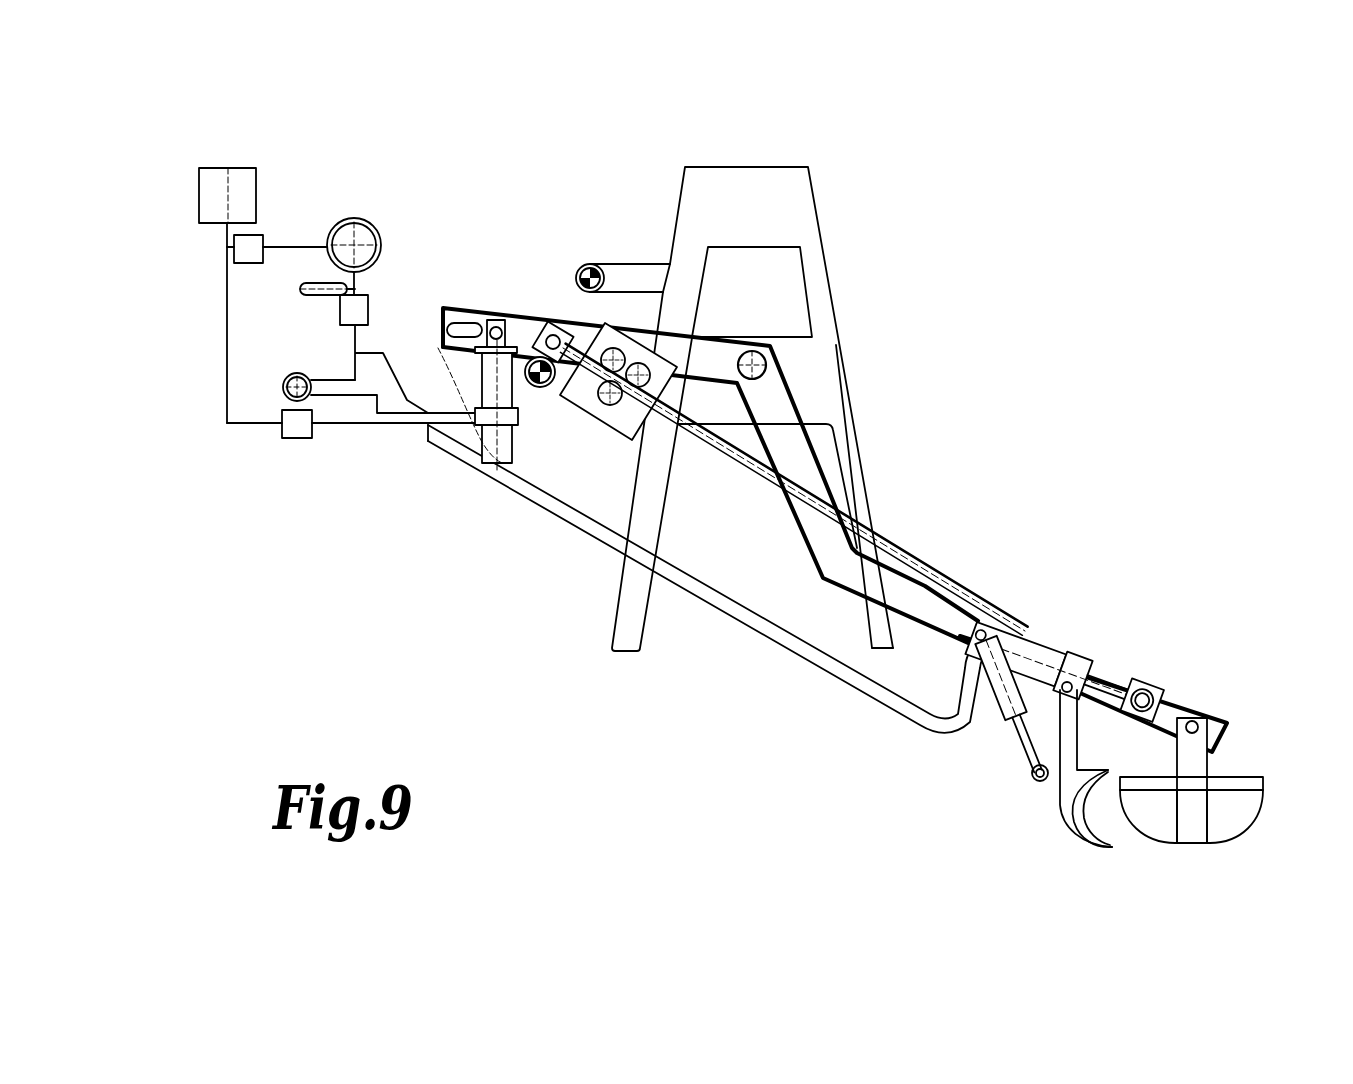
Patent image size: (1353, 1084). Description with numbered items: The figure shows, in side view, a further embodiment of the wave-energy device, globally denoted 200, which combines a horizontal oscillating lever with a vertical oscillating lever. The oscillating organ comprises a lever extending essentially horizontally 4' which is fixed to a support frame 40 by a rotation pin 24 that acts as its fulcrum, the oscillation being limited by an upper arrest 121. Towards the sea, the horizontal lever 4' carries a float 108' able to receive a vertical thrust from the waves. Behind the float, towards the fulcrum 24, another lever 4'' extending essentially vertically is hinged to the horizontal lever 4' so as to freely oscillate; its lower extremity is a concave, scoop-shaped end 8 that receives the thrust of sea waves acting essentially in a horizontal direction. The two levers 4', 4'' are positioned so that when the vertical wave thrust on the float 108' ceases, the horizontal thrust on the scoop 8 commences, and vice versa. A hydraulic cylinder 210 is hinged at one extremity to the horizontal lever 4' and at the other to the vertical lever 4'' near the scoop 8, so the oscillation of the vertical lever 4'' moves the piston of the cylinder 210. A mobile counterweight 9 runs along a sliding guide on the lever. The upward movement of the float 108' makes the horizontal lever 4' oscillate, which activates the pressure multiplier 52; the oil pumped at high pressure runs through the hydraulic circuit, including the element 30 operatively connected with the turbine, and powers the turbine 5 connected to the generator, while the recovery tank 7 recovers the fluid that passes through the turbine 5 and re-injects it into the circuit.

The recovery tank 7 is at (198, 178).
The turbine 5 is at (356, 217).
The pressure multiplier 52 is at (480, 383).
The element operatively connected with the turbine 30 is at (322, 294).
The upper arrest 121 is at (587, 265).
The support frame 40 is at (815, 193).
The rotation pin 24 is at (775, 360).
The horizontal oscillating lever 4' is at (796, 464).
The mobile counterweight 9 is at (587, 416).
The hydraulic cylinder 210 is at (1000, 657).
The vertical lever 4'' is at (1080, 670).
The float 108' is at (1196, 758).
The scoop 8 is at (1060, 808).
The device 200 is at (970, 198).